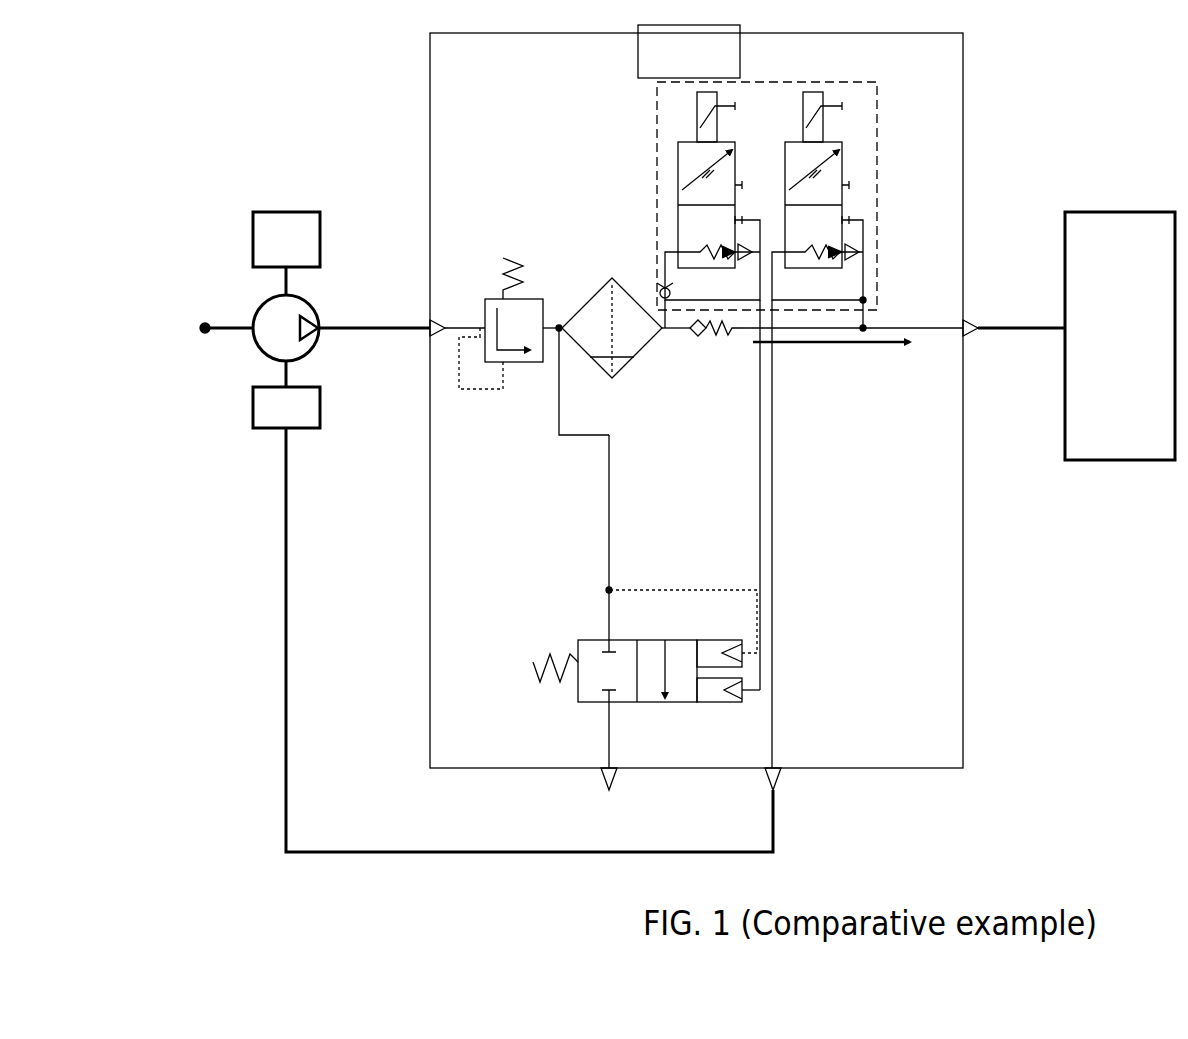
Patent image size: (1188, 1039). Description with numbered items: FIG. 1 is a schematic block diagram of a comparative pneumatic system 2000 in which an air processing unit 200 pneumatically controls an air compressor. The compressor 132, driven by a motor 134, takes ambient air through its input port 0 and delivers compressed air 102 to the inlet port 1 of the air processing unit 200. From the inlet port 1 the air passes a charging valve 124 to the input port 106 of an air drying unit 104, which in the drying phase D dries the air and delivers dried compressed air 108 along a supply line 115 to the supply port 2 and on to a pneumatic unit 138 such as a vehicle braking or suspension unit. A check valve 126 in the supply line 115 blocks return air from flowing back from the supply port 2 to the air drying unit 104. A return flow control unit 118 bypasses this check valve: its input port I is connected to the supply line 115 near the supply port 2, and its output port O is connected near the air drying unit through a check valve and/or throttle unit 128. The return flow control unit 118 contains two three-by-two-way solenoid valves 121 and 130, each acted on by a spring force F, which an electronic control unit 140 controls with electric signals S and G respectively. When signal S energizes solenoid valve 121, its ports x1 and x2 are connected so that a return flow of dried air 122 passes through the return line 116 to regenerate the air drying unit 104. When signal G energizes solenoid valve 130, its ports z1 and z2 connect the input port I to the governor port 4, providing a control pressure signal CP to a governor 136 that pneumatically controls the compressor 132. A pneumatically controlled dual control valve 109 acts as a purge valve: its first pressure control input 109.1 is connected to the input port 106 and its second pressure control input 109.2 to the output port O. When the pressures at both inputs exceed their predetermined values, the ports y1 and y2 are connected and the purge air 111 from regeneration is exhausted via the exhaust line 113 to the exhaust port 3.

The pneumatic system 2000 is at (1074, 96).
The air processing unit 200 is at (428, 86).
The motor 134 is at (253, 214).
The air compressor 132 is at (253, 316).
The input port 0 is at (204, 334).
The governor 136 is at (253, 404).
The control pressure signal CP is at (406, 848).
The inlet port 1 is at (430, 326).
The compressed air 102 is at (466, 320).
The charging valve 124 is at (524, 363).
The input port of air drying unit 106 is at (558, 324).
The air drying unit 104 is at (609, 280).
The check valve and/or throttle unit 128 is at (668, 342).
The output port of return flow control unit O is at (665, 288).
The check valve 126 is at (700, 340).
The supply line 115 is at (738, 332).
The drying phase flow D is at (845, 348).
The return flow control unit 118 is at (654, 124).
The electronic control unit 140 is at (636, 47).
The 3/2-way solenoid valve 121 is at (678, 166).
The port of solenoid valve 121 x1 is at (736, 156).
The port of solenoid valve 121 x2 is at (678, 186).
The electric control signal S is at (742, 122).
The electric control signal G is at (780, 105).
The 3/2-way solenoid valve 130 is at (844, 174).
The port of solenoid valve 130 z1 is at (842, 158).
The port of solenoid valve 130 z2 is at (786, 186).
The spring force F is at (684, 465).
The input port of return flow control unit I is at (868, 326).
The return line 116 is at (784, 302).
The return flow of dried air 122 is at (838, 306).
The supply port 2 is at (976, 320).
The dried compressed air 108 is at (930, 322).
The pneumatic unit 138 is at (1116, 460).
The exhaust line 113 is at (612, 483).
The purge air 111 is at (605, 512).
The pneumatically controlled dual control valve 109 is at (578, 640).
The first pressure control input 109.1 is at (710, 638).
The second pressure control input 109.2 is at (734, 704).
The port of dual control valve y1 is at (668, 640).
The port of dual control valve y2 is at (665, 703).
The exhaust port 3 is at (604, 778).
The governor port 4 is at (780, 772).